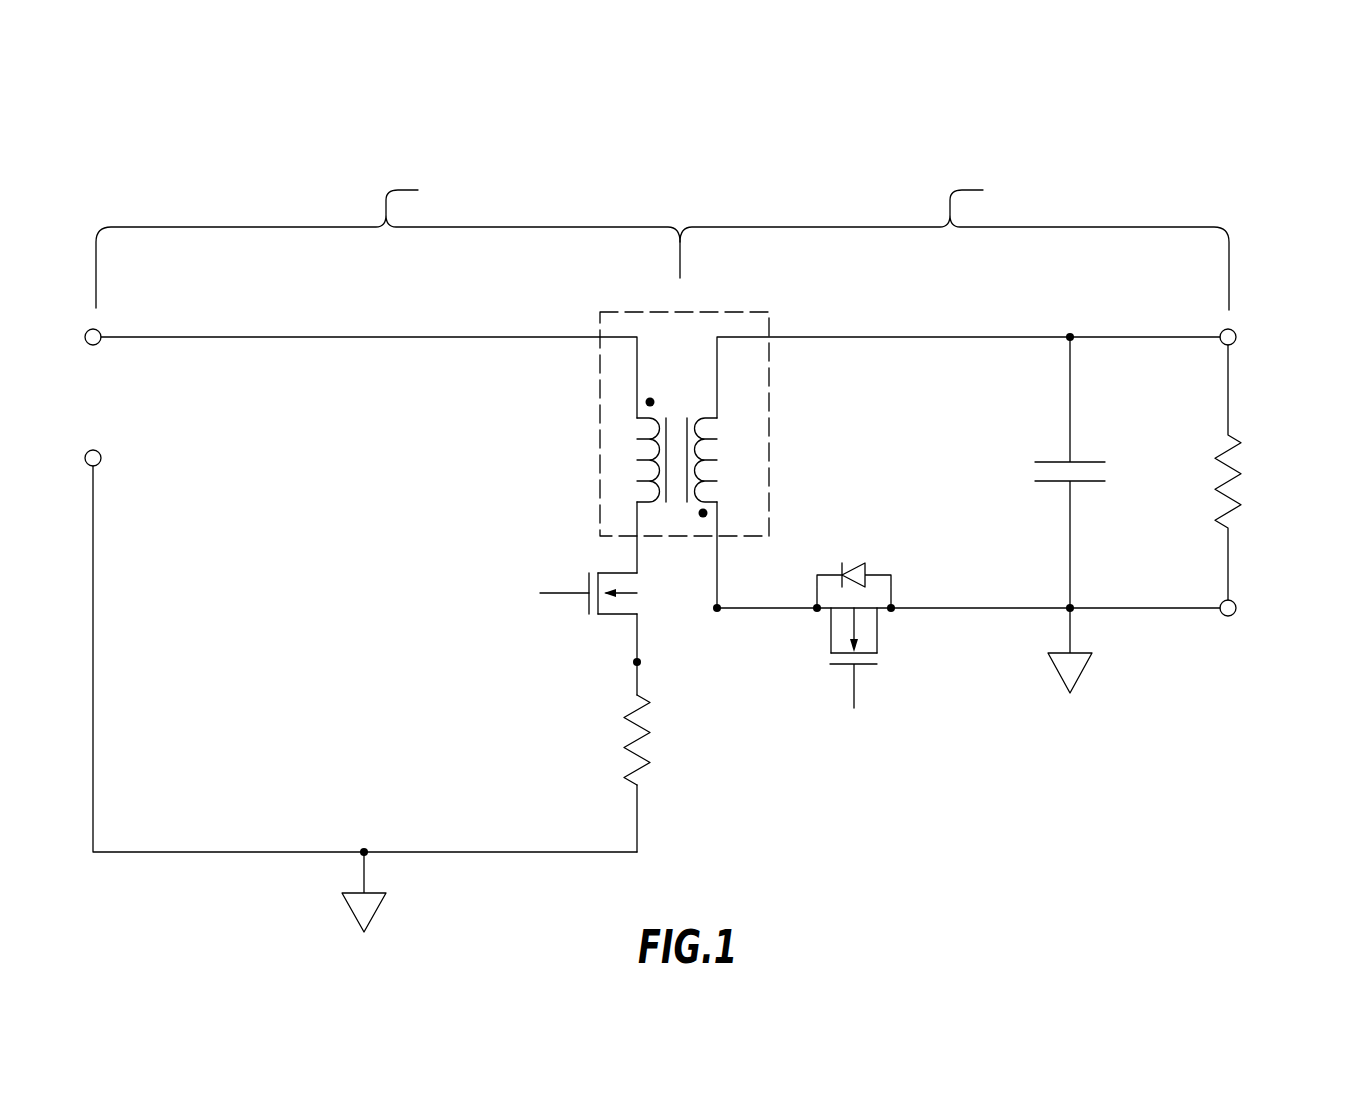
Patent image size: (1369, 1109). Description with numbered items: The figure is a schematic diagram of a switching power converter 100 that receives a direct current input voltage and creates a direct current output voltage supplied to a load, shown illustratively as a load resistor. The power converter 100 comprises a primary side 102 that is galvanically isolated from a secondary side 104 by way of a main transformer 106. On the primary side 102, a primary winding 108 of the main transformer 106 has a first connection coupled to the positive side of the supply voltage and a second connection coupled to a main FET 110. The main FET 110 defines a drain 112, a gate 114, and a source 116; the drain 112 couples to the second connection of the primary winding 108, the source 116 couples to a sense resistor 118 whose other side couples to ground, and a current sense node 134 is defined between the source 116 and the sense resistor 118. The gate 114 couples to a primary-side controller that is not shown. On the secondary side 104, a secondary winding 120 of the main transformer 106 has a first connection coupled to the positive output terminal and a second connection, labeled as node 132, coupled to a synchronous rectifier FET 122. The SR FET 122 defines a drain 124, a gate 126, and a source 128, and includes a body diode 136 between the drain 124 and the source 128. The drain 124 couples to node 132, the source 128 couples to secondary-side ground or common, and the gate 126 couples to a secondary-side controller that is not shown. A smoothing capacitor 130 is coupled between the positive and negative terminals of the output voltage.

The switching power converter 100 is at (143, 170).
The primary side 102 is at (388, 233).
The secondary side 104 is at (954, 235).
The main transformer 106 is at (664, 407).
The primary winding 108 is at (637, 437).
The main FET 110 is at (541, 625).
The drain 112 is at (633, 572).
The gate 114 is at (548, 590).
The source 116 is at (632, 615).
The sense resistor 118 is at (628, 718).
The secondary winding 120 is at (718, 438).
The synchronous rectifier FET 122 is at (886, 601).
The drain 124 is at (829, 612).
The gate 126 is at (855, 690).
The source 128 is at (878, 613).
The smoothing capacitor 130 is at (1086, 460).
The node 132 is at (718, 612).
The current sense node 134 is at (640, 664).
The body diode 136 is at (860, 565).